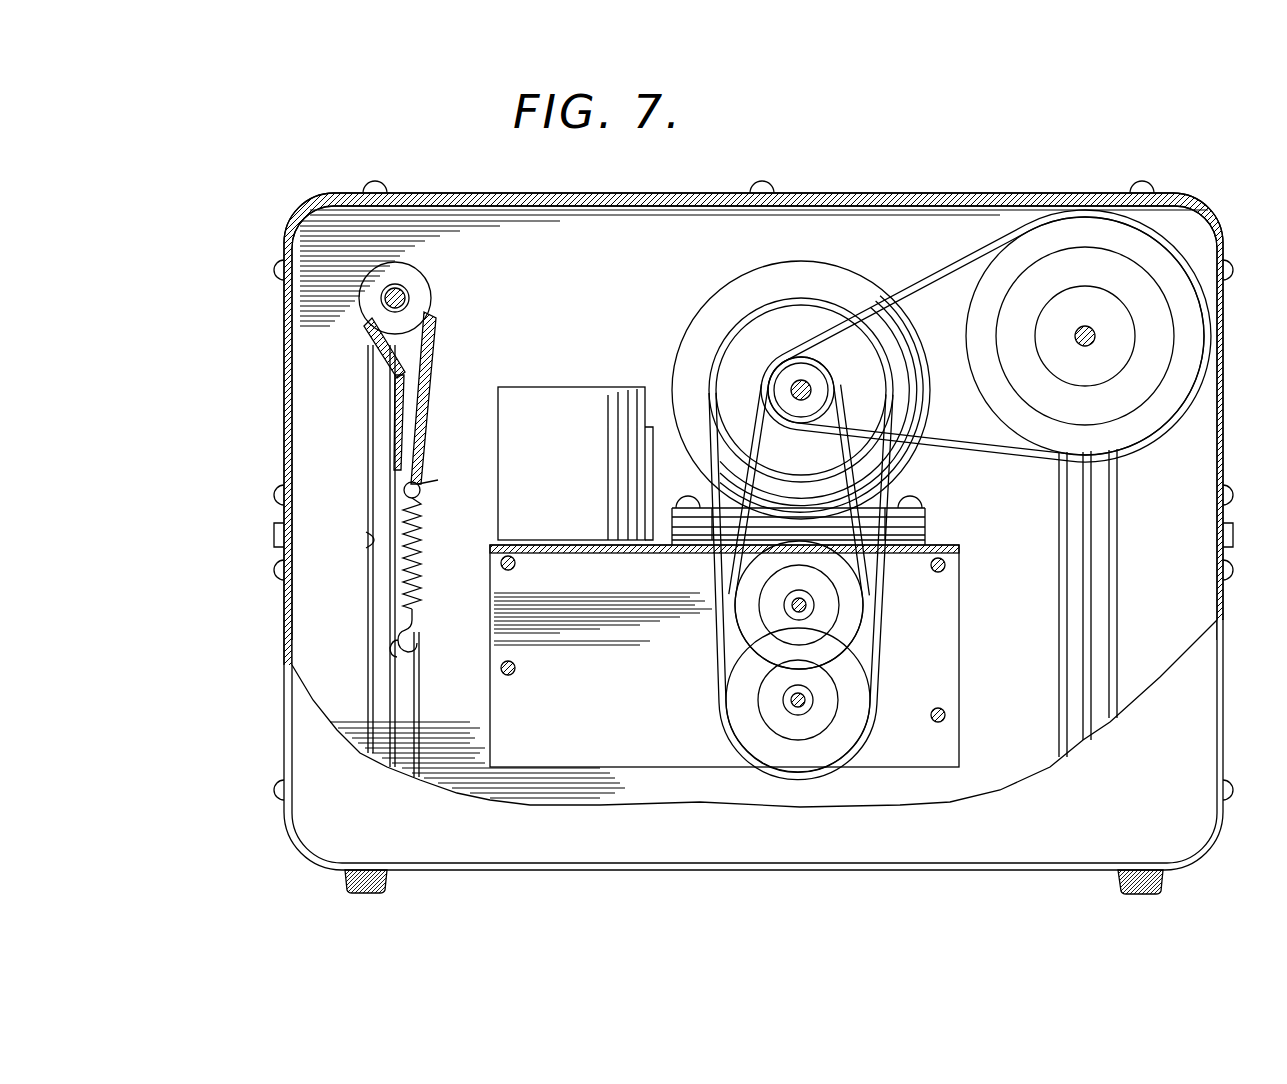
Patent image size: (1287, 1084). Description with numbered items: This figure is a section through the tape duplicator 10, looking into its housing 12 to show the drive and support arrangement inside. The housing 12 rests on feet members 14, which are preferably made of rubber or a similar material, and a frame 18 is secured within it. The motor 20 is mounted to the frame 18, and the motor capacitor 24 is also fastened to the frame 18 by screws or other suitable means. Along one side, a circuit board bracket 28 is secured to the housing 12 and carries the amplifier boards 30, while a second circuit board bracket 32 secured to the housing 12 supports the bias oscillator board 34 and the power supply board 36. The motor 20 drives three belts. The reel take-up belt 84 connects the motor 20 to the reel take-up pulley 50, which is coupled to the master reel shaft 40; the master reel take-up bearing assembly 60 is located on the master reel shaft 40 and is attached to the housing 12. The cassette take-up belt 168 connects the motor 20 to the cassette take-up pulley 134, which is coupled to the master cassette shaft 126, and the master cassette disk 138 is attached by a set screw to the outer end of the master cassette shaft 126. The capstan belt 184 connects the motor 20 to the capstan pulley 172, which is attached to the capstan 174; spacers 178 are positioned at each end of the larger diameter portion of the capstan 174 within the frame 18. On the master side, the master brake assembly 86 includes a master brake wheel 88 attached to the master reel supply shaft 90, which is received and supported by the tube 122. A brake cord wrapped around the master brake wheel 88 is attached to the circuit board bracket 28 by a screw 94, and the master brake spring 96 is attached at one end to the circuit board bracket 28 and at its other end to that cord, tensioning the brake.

The tape duplicator 10 is at (210, 636).
The housing 12 is at (280, 357).
The feet members 14 is at (348, 882).
The frame 18 is at (961, 581).
The motor 20 is at (695, 318).
The motor capacitor 24 is at (575, 463).
The circuit board bracket 28 is at (402, 607).
The amplifier boards 30 is at (367, 445).
The circuit board bracket 32 is at (1088, 521).
The bias oscillator board 34 is at (1059, 621).
The power supply board 36 is at (1116, 618).
The master reel shaft 40 is at (1076, 343).
The reel take-up pulley 50 is at (1160, 267).
The master reel take-up bearing assembly 60 is at (1121, 347).
The reel take-up belt 84 is at (933, 282).
The master brake assembly 86 is at (462, 336).
The master brake wheel 88 is at (400, 278).
The master reel supply shaft 90 is at (409, 300).
The screw 94 is at (376, 543).
The master brake spring 96 is at (423, 562).
The tube 122 is at (403, 294).
The master cassette shaft 126 is at (790, 605).
The cassette take-up pulley 134 is at (845, 629).
The master cassette disk 138 is at (825, 594).
The cassette take-up belt 168 is at (886, 480).
The capstan pulley 172 is at (749, 731).
The capstan 174 is at (811, 704).
The spacers 178 is at (789, 697).
The capstan belt 184 is at (872, 674).